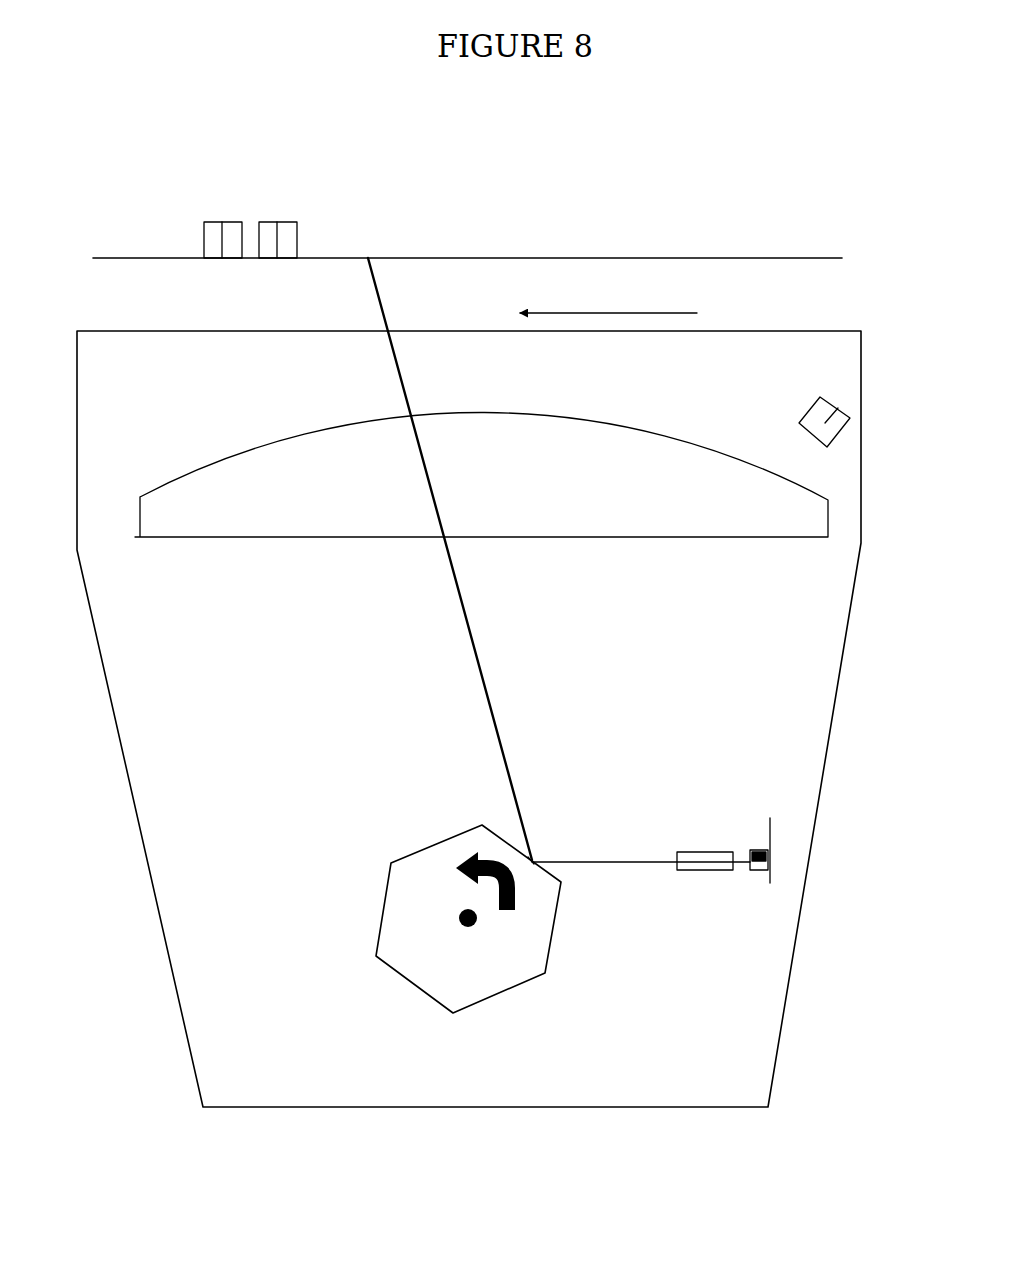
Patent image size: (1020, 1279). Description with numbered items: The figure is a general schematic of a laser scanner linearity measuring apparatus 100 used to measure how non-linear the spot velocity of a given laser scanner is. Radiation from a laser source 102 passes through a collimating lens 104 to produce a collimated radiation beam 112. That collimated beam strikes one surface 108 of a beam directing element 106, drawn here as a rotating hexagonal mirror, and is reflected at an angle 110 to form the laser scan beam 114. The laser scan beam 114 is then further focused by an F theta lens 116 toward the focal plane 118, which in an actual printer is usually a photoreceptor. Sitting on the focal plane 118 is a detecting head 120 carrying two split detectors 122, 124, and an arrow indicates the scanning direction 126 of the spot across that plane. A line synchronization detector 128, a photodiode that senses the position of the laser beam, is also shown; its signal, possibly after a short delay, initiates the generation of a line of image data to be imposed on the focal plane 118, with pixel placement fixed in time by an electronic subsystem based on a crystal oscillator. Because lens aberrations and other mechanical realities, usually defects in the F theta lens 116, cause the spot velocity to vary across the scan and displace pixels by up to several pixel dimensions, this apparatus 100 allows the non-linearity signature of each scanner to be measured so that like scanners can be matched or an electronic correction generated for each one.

The laser scanner linearity measuring apparatus 100 is at (167, 1000).
The laser source 102 is at (782, 849).
The collimating lens 104 is at (697, 873).
The beam directing element 106 is at (420, 875).
The surface 108 is at (495, 828).
The angle 110 is at (589, 850).
The collimated radiation beam 112 is at (623, 857).
The laser scan beam 114 is at (484, 638).
The F theta lens 116 is at (481, 474).
The focal plane 118 is at (587, 255).
The detecting head 120 is at (262, 237).
The split detector 122 is at (216, 231).
The split detector 124 is at (271, 231).
The scanning direction 126 is at (675, 313).
The line synchronization detector 128 is at (838, 408).